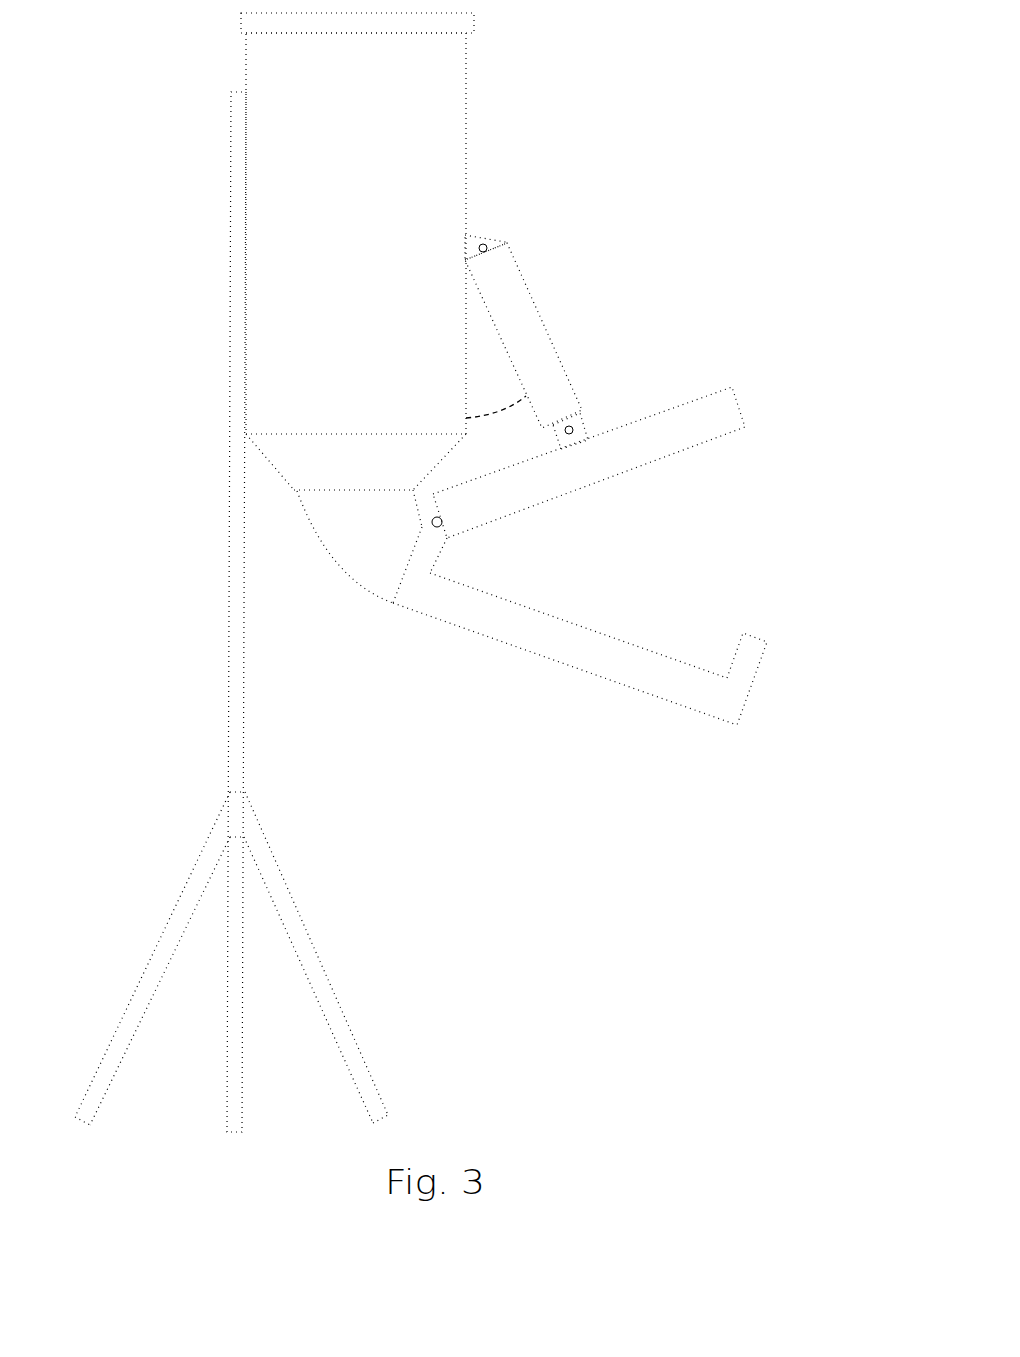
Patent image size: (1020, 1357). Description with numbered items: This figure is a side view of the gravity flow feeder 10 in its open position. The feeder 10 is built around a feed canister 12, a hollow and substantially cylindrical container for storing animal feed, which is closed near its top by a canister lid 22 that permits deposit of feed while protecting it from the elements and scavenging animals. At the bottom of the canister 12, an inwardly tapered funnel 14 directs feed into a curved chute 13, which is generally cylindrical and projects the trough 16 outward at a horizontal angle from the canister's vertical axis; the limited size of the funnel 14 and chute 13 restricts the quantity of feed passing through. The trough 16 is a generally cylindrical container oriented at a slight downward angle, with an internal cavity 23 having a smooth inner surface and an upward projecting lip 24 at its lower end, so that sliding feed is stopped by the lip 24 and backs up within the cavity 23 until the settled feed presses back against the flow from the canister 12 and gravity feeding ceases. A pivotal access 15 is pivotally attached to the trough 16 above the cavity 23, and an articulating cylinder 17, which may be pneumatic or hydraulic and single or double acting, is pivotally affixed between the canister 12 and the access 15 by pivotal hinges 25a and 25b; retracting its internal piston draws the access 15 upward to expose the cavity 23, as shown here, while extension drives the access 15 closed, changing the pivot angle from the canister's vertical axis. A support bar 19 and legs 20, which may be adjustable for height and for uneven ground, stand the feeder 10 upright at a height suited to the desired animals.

The gravity flow feeder 10 is at (745, 214).
The feed canister 12 is at (467, 147).
The curved chute 13 is at (360, 547).
The funnel 14 is at (352, 468).
The pivotal access 15 is at (733, 387).
The trough 16 is at (565, 682).
The articulating cylinder 17 is at (557, 355).
The support bar 19 is at (232, 200).
The legs 20 is at (327, 978).
The canister lid 22 is at (475, 25).
The internal cavity 23 is at (613, 637).
The upward projecting lip 24 is at (753, 683).
The pivotal hinge 25a is at (480, 238).
The pivotal hinge 25b is at (577, 428).